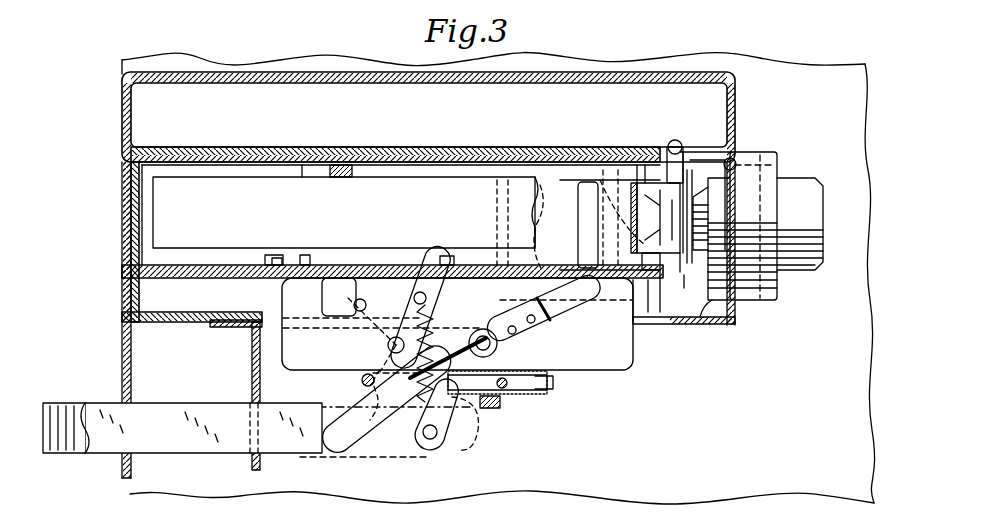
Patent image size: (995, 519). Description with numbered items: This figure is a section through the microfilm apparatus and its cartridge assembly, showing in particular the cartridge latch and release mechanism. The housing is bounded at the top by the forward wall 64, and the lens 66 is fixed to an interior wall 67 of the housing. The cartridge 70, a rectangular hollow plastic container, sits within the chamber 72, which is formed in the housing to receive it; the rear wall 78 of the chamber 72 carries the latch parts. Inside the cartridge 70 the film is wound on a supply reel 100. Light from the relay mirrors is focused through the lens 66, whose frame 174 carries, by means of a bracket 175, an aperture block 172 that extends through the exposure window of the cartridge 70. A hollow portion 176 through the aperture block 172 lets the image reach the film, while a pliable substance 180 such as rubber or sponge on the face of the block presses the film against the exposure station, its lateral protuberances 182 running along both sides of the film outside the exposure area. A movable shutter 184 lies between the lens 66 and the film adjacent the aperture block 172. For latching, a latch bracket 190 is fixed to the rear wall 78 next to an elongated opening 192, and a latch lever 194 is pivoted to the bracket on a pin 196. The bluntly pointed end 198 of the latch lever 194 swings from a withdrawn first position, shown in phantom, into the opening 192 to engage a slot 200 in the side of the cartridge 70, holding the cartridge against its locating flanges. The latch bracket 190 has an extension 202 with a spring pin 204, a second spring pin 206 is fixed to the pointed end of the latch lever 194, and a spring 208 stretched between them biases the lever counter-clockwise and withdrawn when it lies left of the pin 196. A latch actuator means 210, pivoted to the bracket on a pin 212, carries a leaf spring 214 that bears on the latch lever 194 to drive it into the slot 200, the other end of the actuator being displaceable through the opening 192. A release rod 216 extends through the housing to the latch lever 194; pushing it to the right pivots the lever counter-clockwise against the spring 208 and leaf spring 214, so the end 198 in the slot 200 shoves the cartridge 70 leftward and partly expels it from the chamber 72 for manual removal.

The forward wall 64 is at (573, 88).
The lens 66 is at (826, 215).
The interior wall 67 is at (722, 322).
The cartridge 70 is at (125, 165).
The chamber 72 is at (272, 168).
The rear wall 78 is at (178, 278).
The supply reel 100 is at (152, 212).
The aperture block 172 is at (684, 285).
The frame 174 is at (755, 152).
The bracket 175 is at (700, 152).
The hollow portion 176 is at (640, 180).
The pliable substance 180 is at (666, 272).
The protuberances 182 is at (612, 178).
The shutter 184 is at (684, 262).
The latch bracket 190 is at (312, 366).
The elongated opening 192 is at (282, 284).
The latch lever 194 is at (438, 295).
The pin 196 is at (364, 381).
The end 198 is at (432, 265).
The slot 200 is at (285, 258).
The extension 202 is at (448, 440).
The spring pin 204 is at (430, 447).
The second spring pin 206 is at (360, 298).
The spring 208 is at (360, 330).
The latch actuator means 210 is at (545, 250).
The pin 212 is at (498, 345).
The leaf spring 214 is at (428, 318).
The release rod 216 is at (162, 418).